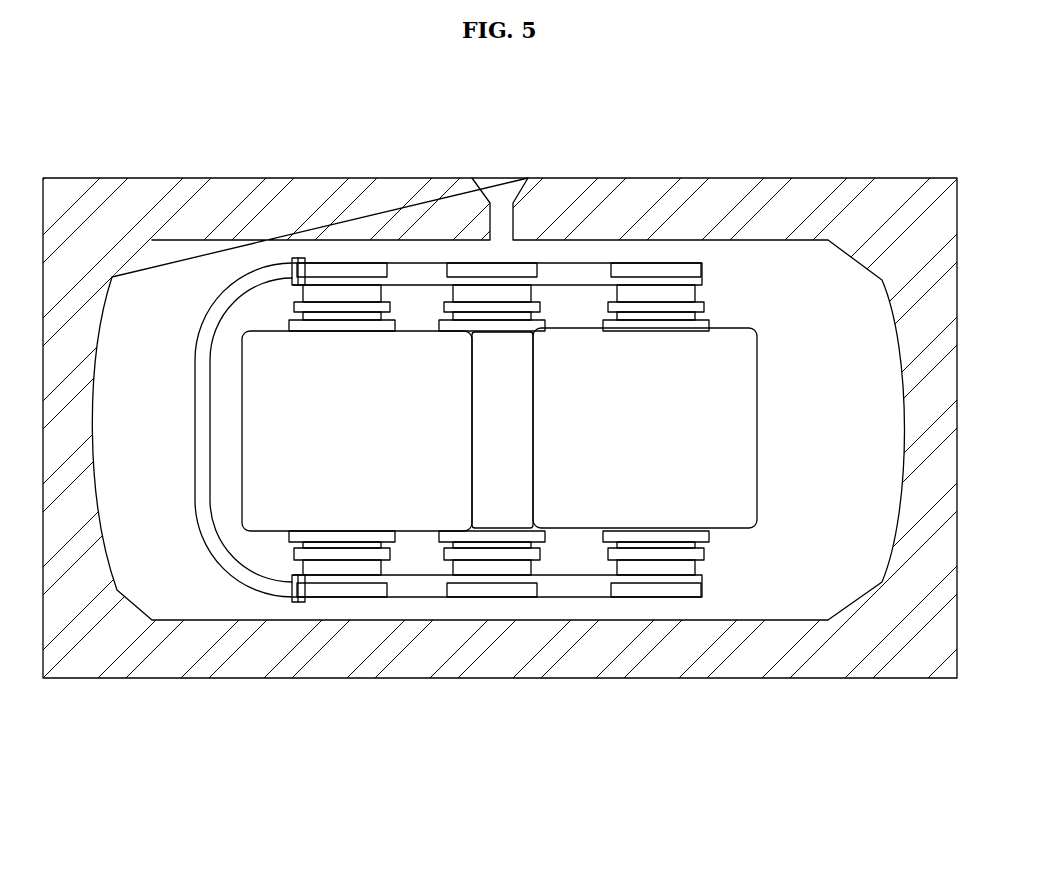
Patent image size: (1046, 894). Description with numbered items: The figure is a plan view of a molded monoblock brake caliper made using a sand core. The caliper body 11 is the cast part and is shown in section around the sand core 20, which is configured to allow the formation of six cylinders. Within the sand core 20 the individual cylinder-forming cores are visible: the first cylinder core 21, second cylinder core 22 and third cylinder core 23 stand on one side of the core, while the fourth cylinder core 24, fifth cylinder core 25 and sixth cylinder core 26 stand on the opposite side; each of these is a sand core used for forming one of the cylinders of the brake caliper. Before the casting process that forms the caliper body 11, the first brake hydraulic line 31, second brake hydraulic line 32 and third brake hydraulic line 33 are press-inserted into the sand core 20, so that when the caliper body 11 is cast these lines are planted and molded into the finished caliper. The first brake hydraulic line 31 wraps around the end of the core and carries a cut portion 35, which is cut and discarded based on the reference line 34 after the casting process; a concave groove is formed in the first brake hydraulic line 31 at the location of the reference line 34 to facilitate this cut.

The caliper body 11 is at (820, 300).
The sand core 20 is at (733, 533).
The first cylinder core 21 is at (657, 272).
The second cylinder core 22 is at (477, 272).
The third cylinder core 23 is at (367, 272).
The fourth cylinder core 24 is at (658, 590).
The fifth cylinder core 25 is at (493, 590).
The sixth cylinder core 26 is at (365, 595).
The first brake hydraulic line 31 is at (246, 577).
The second brake hydraulic line 32 is at (413, 272).
The third brake hydraulic line 33 is at (573, 273).
The reference line 34 is at (290, 263).
The cut portion 35 is at (314, 272).